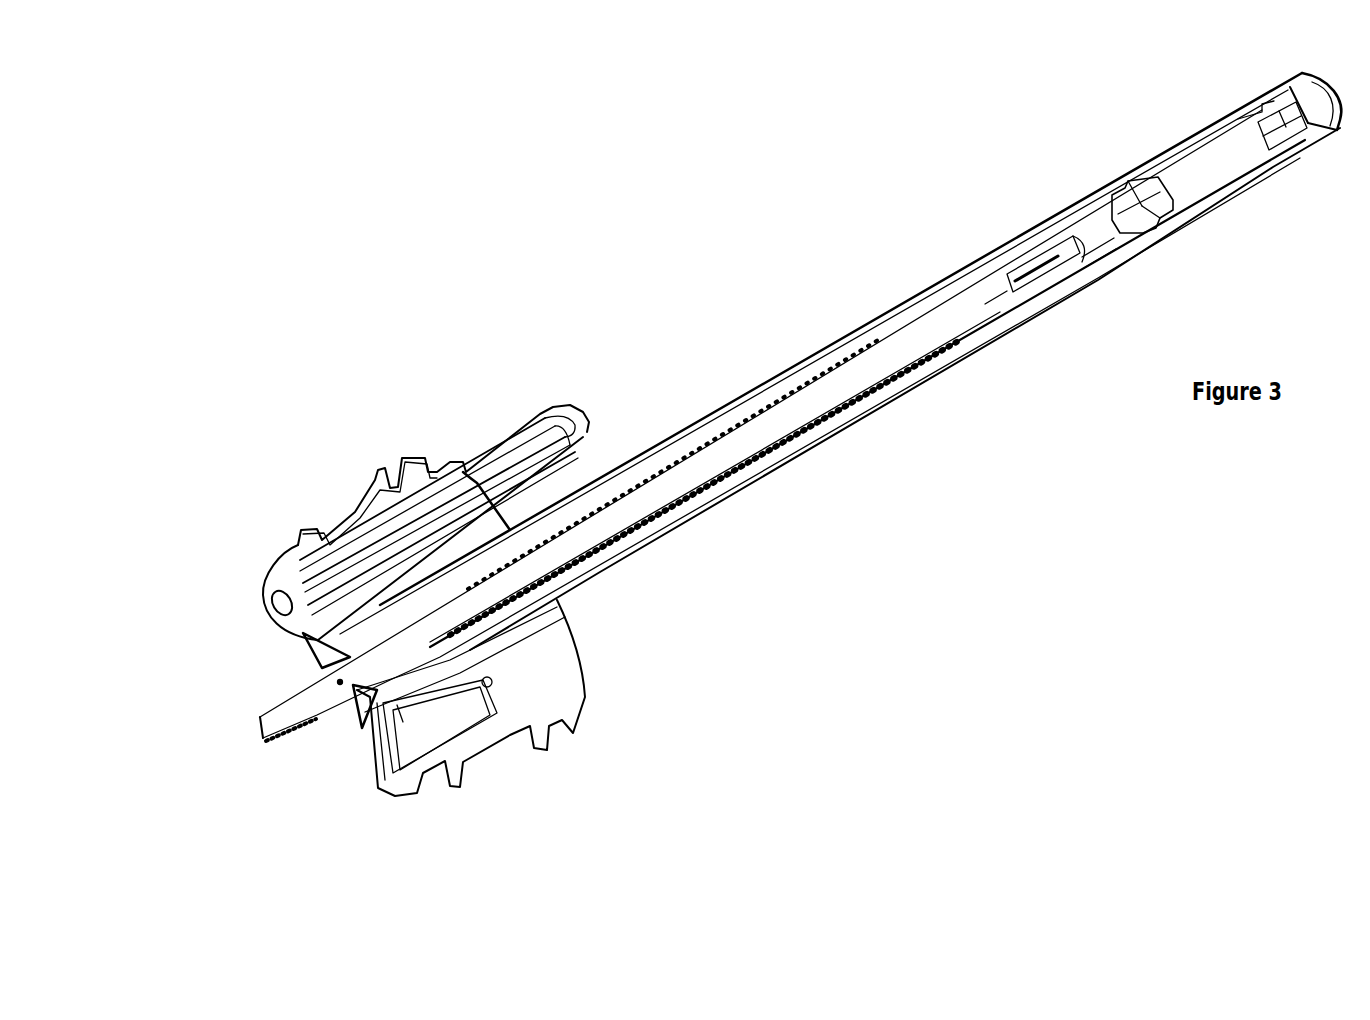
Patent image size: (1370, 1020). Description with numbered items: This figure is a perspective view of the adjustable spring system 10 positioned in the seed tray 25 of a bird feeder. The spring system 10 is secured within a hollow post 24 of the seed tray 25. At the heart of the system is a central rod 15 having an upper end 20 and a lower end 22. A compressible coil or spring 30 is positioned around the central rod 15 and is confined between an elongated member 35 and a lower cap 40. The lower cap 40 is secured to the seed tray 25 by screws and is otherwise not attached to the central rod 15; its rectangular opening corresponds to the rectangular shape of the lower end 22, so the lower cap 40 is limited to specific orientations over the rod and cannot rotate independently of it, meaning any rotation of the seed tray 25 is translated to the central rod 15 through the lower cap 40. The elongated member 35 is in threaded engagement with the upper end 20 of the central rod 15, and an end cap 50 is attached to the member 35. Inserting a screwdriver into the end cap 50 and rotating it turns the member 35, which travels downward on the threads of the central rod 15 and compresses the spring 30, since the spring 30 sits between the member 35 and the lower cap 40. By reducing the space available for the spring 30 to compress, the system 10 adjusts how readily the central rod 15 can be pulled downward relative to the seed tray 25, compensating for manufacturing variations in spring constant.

The adjustable spring system 10 is at (1270, 260).
The central rod 15 is at (713, 468).
The upper end 20 is at (992, 302).
The lower end 22 is at (358, 670).
The hollow post 24 is at (850, 333).
The seed tray 25 is at (572, 694).
The spring 30 is at (776, 448).
The elongated member 35 is at (967, 277).
The lower cap 40 is at (423, 608).
The end cap 50 is at (1148, 193).